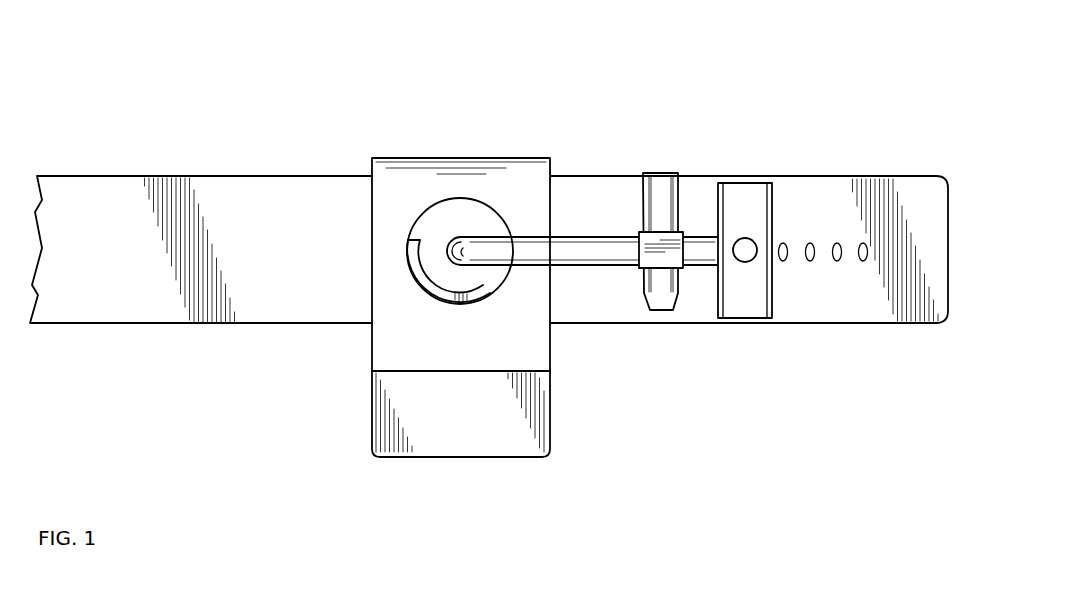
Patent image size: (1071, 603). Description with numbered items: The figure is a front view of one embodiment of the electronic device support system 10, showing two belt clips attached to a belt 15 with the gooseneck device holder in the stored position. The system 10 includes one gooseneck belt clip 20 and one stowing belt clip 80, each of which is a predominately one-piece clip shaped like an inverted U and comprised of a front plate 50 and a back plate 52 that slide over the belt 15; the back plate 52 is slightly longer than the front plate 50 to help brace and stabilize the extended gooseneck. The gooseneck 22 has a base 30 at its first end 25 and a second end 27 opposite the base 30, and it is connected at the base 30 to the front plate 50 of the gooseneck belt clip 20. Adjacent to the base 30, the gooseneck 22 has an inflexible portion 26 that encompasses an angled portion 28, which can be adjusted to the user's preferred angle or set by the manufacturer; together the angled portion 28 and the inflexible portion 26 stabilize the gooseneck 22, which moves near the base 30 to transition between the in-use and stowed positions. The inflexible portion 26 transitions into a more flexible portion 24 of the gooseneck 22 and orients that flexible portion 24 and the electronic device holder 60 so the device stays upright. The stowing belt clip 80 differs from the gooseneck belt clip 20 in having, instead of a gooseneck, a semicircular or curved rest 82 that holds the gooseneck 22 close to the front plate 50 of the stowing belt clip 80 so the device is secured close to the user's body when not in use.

The electronic device support system 10 is at (705, 77).
The belt 15 is at (815, 177).
The gooseneck belt clip 20 is at (456, 158).
The gooseneck 22 is at (582, 238).
The flexible portion 24 is at (590, 263).
The first end 25 is at (470, 266).
The inflexible portion 26 is at (460, 263).
The second end 27 is at (699, 242).
The angled portion 28 is at (470, 237).
The base 30 is at (440, 207).
The front plate 50 is at (540, 359).
The back plate 52 is at (545, 436).
The electronic device holder 60 is at (748, 312).
The stowing belt clip 80 is at (662, 175).
The rest 82 is at (678, 264).